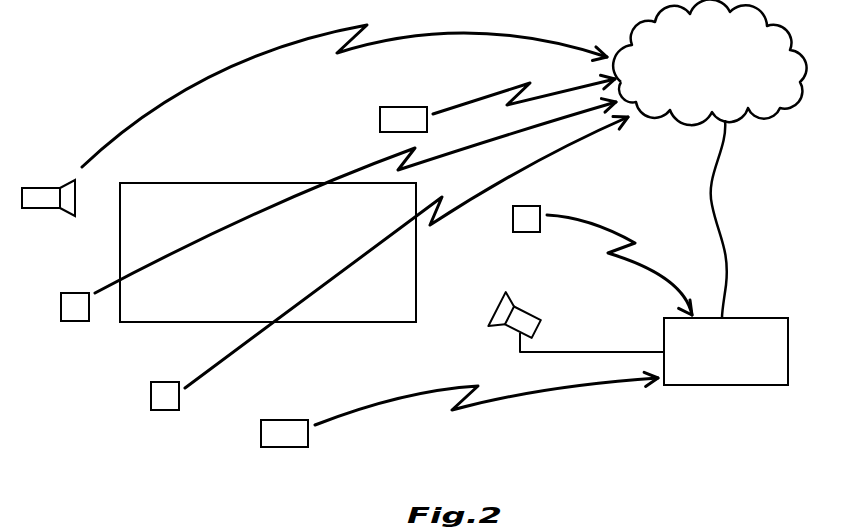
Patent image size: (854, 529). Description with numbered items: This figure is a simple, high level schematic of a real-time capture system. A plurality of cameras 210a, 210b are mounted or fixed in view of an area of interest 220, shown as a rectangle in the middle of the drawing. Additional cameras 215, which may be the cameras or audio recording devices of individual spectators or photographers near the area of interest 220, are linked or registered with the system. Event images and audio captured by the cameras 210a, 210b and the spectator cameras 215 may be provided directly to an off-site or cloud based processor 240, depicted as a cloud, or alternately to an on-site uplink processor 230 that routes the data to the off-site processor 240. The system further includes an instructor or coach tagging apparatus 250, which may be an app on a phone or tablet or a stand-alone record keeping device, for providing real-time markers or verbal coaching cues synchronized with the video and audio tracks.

The camera 210a is at (38, 196).
The camera 210b is at (522, 323).
The additional cameras 215 is at (78, 312).
The area of interest 220 is at (287, 262).
The uplink processor 230 is at (752, 373).
The off-site or cloud based processor 240 is at (762, 103).
The instructor or coach tagging apparatus 250 is at (392, 117).